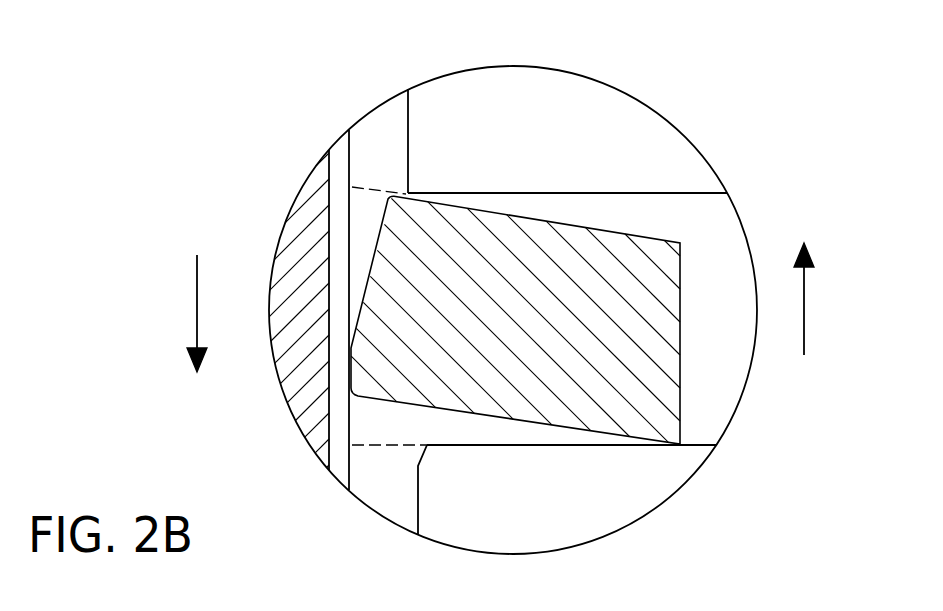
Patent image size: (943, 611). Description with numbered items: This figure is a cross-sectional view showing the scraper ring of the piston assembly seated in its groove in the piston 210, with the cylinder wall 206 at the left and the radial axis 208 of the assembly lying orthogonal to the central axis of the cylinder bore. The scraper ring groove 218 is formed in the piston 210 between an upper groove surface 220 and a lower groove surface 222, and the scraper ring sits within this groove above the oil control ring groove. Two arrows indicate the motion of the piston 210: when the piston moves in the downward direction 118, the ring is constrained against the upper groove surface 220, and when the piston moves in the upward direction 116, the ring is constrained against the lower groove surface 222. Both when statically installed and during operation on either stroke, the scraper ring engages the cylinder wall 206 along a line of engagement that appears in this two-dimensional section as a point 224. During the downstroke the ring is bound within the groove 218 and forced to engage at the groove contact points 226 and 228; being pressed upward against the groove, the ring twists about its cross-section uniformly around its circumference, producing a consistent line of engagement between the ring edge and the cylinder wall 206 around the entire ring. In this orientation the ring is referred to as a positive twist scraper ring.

The upward direction 116 is at (804, 303).
The downward direction 118 is at (197, 320).
The cylinder wall 206 is at (350, 149).
The radial axis 208 is at (378, 446).
The piston 210 is at (549, 121).
The scraper ring groove 218 is at (718, 217).
The upper groove surface 220 is at (648, 193).
The lower groove surface 222 is at (697, 447).
The point 224 is at (330, 372).
The groove contact point 226 is at (677, 468).
The groove contact point 228 is at (420, 194).